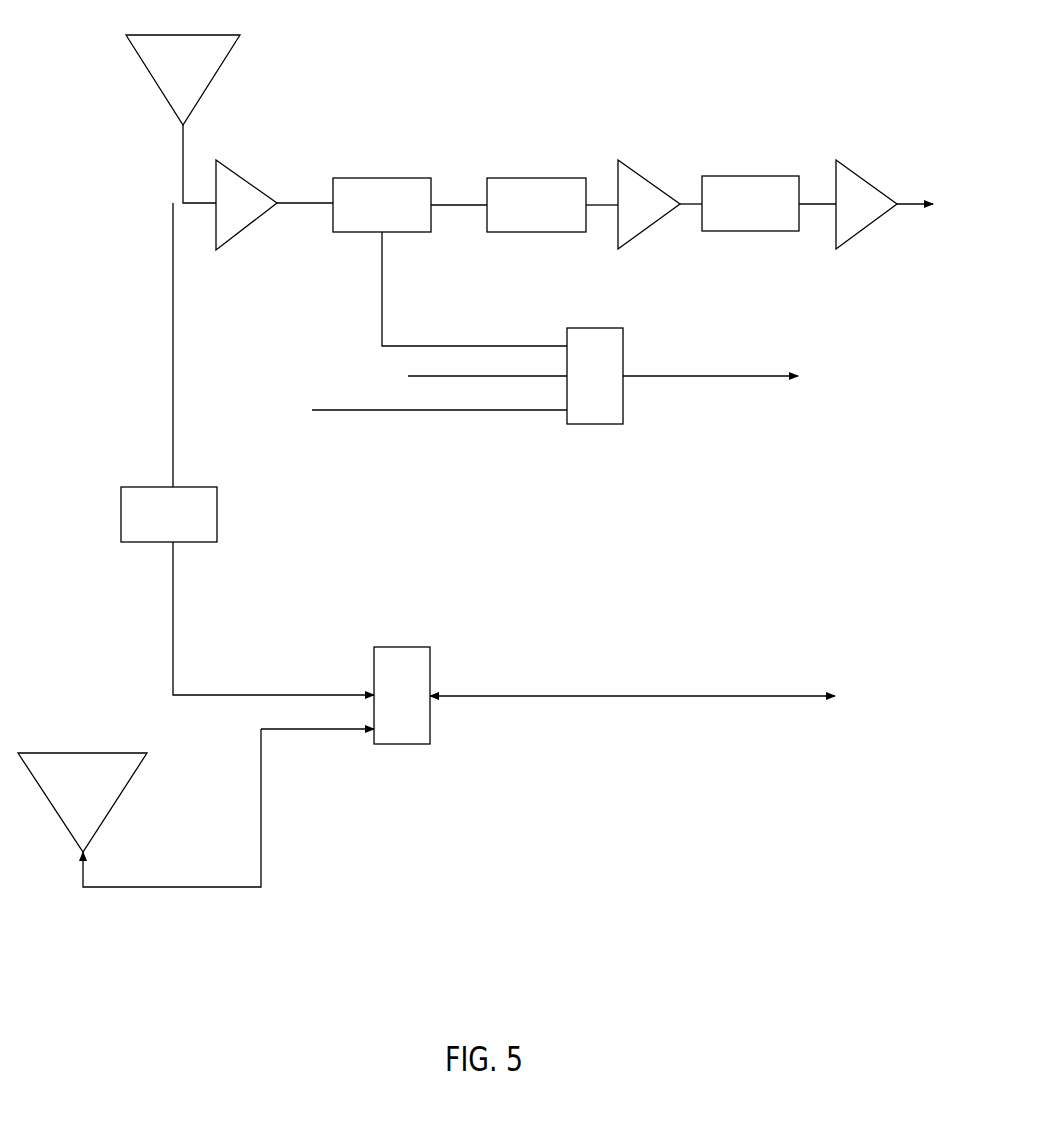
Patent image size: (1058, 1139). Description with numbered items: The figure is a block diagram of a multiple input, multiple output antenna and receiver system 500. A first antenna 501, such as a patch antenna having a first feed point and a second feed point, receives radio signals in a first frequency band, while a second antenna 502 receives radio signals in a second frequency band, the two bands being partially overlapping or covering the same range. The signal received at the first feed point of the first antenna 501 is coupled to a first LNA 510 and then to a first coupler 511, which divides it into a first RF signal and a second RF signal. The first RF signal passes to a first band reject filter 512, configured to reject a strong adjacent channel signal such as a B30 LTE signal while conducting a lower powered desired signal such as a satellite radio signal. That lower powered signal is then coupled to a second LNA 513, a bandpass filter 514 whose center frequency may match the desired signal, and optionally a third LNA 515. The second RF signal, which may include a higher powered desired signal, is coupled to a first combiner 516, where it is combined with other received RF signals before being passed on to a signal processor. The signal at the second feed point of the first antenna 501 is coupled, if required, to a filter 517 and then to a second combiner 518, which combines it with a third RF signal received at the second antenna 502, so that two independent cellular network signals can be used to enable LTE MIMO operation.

The multiple input, multiple output (MIMO) antenna and receiver system 500 is at (517, 150).
The first antenna 501 is at (183, 119).
The second antenna 502 is at (139, 808).
The first LNA 510 is at (274, 205).
The first coupler 511 is at (450, 262).
The first band reject filter 512 is at (552, 205).
The second LNA 513 is at (660, 204).
The bandpass filter 514 is at (769, 203).
The third LNA 515 is at (884, 204).
The first combiner 516 is at (555, 376).
The filter 517 is at (247, 449).
The second combiner 518 is at (548, 695).